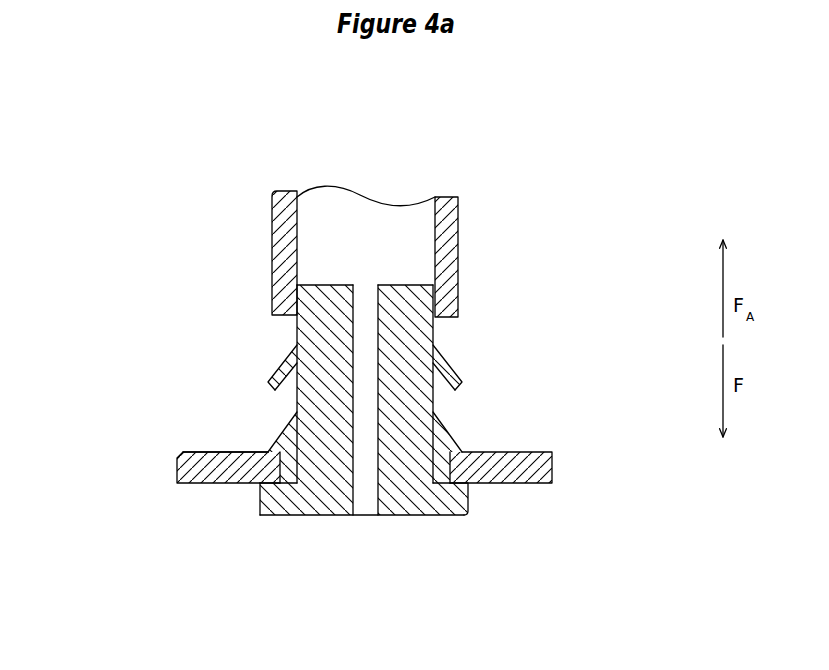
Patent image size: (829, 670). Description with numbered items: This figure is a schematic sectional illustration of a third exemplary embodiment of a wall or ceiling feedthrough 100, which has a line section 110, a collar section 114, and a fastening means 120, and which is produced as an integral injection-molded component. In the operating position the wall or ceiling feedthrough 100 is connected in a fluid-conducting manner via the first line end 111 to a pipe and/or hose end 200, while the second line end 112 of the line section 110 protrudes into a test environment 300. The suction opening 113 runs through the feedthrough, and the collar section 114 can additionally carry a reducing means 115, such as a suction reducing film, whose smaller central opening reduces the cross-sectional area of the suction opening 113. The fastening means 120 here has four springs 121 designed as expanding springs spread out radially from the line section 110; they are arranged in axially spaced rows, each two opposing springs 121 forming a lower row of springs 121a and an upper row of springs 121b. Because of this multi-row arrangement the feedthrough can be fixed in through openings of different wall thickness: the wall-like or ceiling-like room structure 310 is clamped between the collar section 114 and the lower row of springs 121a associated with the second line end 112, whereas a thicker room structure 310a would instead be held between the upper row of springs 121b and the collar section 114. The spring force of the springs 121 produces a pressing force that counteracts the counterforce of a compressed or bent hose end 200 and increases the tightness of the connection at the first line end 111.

The wall or ceiling feedthrough 100 is at (382, 385).
The line section 110 is at (437, 332).
The first line end 111 is at (467, 320).
The second line end 112 is at (445, 537).
The suction opening 113 is at (362, 502).
The collar section 114 is at (260, 512).
The reducing means 115 is at (322, 516).
The fastening means 120 is at (207, 360).
The springs 121 is at (436, 425).
The lower row of springs 121a is at (247, 420).
The upper row of springs 121b is at (250, 360).
The pipe and/or hose end 200 is at (318, 185).
The test environment 300 is at (354, 460).
The wall-like or ceiling-like room structure 310 is at (520, 483).
The wall-like or ceiling-like room structure 310a is at (198, 392).